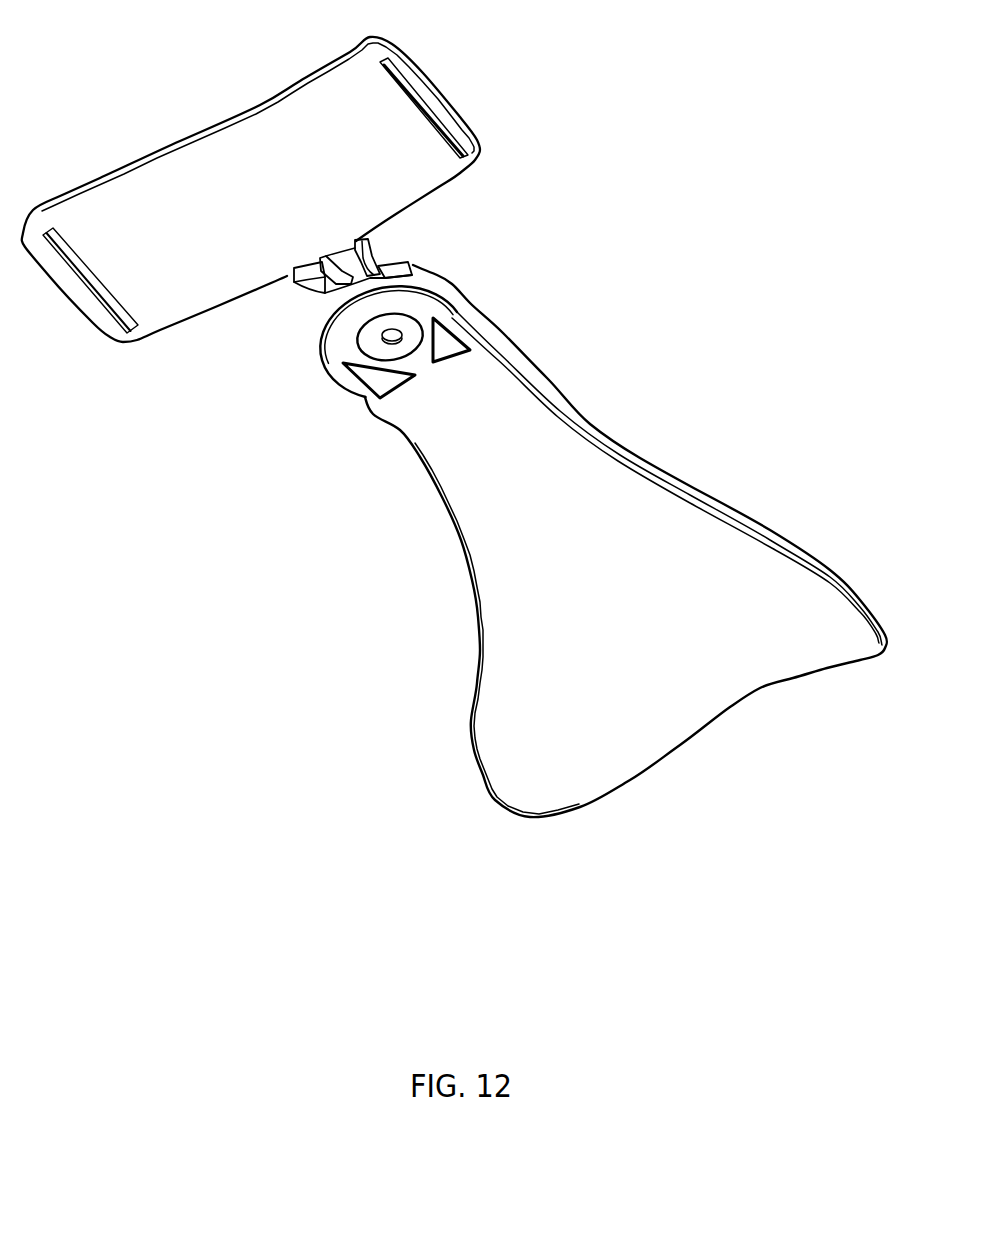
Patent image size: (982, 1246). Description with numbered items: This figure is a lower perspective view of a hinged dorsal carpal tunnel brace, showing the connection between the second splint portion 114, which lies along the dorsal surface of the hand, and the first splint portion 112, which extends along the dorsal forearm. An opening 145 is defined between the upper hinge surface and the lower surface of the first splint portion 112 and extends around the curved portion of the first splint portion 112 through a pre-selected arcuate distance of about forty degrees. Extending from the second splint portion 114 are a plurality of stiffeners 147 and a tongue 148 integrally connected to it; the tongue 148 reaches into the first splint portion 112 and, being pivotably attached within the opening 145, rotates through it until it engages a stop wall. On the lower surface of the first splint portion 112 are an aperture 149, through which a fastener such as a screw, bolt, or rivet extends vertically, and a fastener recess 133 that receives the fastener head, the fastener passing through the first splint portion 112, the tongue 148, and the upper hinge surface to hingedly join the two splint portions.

The first splint portion 112 is at (710, 470).
The second splint portion 114 is at (224, 88).
The fastener recess 133 is at (377, 345).
The opening 145 is at (429, 252).
The stiffeners 147 is at (301, 295).
The tongue 148 is at (370, 237).
The aperture 149 is at (394, 343).